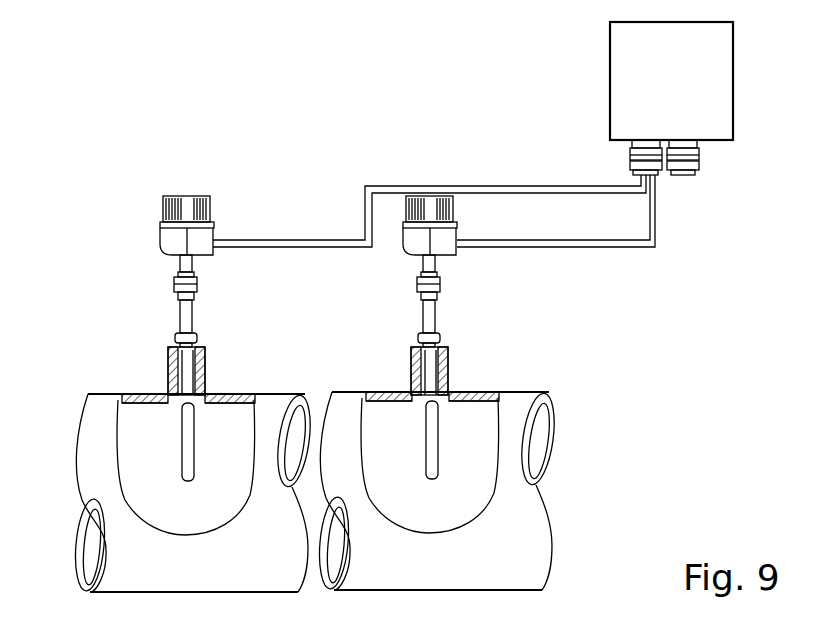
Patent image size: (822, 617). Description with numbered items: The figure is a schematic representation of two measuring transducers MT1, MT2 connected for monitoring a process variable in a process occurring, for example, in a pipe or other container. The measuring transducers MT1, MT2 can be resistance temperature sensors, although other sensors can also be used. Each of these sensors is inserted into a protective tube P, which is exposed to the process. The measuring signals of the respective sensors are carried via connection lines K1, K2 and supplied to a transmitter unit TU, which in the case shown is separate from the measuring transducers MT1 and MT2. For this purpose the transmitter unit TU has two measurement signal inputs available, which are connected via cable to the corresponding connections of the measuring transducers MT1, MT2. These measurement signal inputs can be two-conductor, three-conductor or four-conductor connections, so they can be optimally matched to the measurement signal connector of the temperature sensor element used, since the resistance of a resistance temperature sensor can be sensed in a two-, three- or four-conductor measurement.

The protective tube P is at (187, 431).
The first measuring transducer MT1 is at (210, 335).
The second measuring transducer MT2 is at (453, 335).
The transmitter unit TU is at (618, 81).
The first connection line K1 is at (390, 186).
The second connection line K2 is at (625, 246).